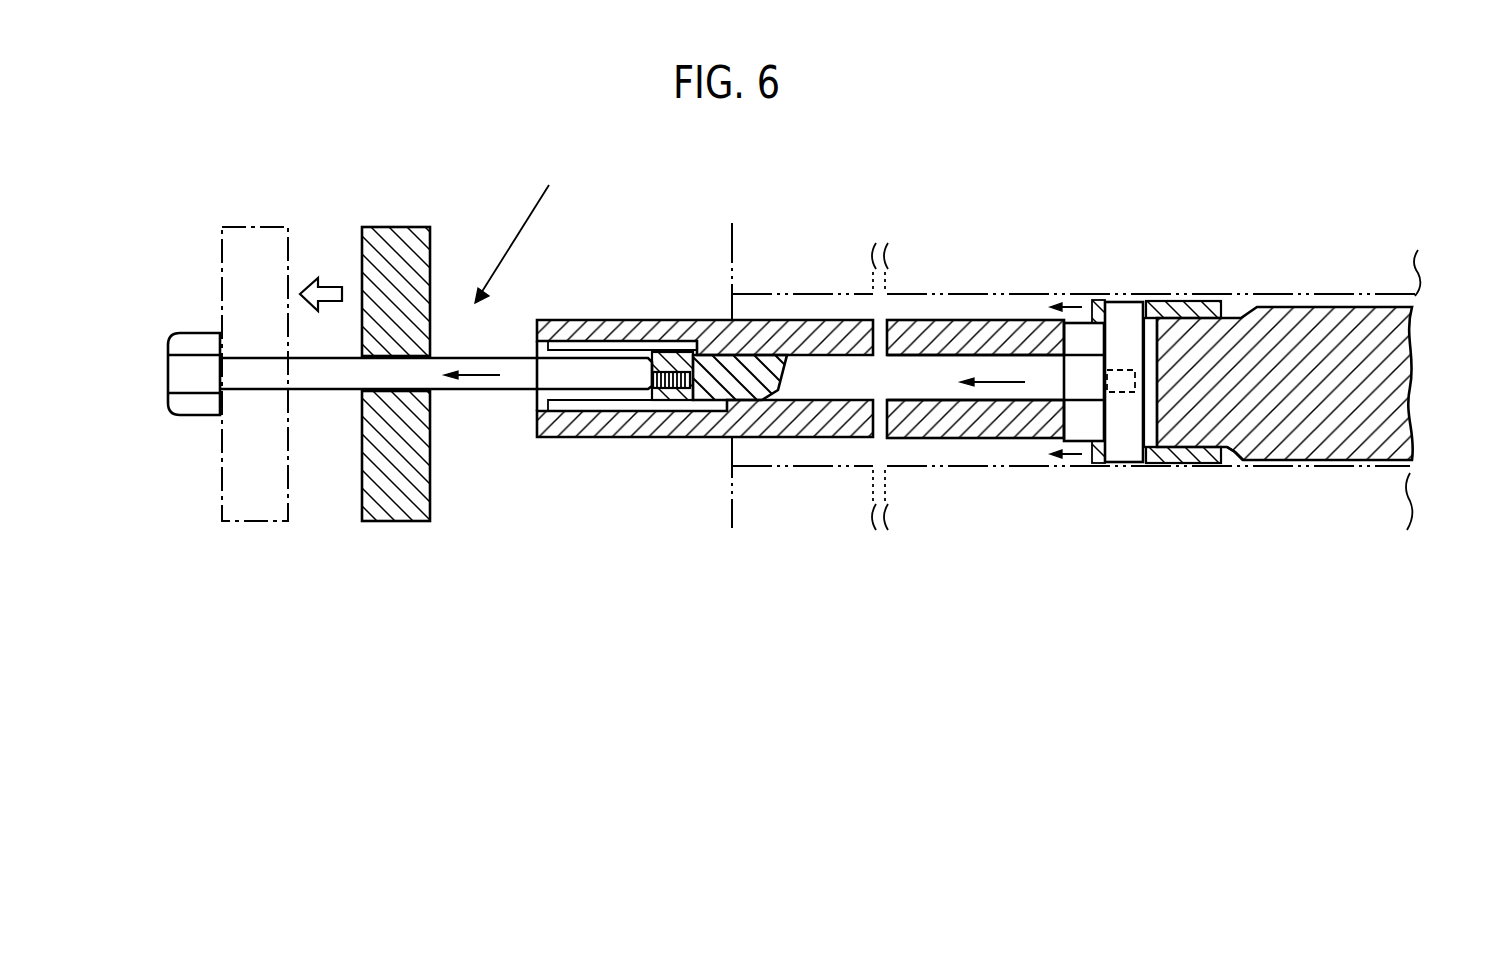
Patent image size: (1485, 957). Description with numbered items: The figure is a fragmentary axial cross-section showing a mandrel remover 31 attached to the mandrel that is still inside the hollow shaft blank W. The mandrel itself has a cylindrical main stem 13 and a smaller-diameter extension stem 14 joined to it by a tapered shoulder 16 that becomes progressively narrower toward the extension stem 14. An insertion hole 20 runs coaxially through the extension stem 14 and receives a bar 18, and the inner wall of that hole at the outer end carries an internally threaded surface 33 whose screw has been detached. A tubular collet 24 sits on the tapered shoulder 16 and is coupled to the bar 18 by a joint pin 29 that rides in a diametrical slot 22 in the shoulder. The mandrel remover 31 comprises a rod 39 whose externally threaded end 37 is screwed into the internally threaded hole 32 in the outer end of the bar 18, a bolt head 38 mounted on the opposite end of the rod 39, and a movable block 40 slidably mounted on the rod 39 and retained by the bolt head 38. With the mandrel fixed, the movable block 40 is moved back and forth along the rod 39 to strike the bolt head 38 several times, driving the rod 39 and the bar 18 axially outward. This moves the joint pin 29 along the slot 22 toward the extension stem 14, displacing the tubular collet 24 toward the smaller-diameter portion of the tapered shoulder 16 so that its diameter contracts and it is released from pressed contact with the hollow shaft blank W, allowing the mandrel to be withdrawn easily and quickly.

The main stem 13 is at (1312, 343).
The extension stem 14 is at (800, 320).
The tapered shoulder 16 is at (1233, 460).
The bar 18 is at (672, 394).
The insertion hole 20 is at (767, 402).
The slot 22 is at (1080, 343).
The tubular collet 24 is at (1192, 303).
The joint pin 29 is at (1123, 333).
The mandrel remover 31 is at (530, 240).
The internally threaded hole 32 is at (677, 355).
The internally threaded surface 33 is at (588, 402).
The externally threaded end 37 is at (648, 360).
The bolt head 38 is at (195, 367).
The rod 39 is at (517, 387).
The movable block 40 is at (269, 234).
The hollow shaft blank W is at (1368, 277).